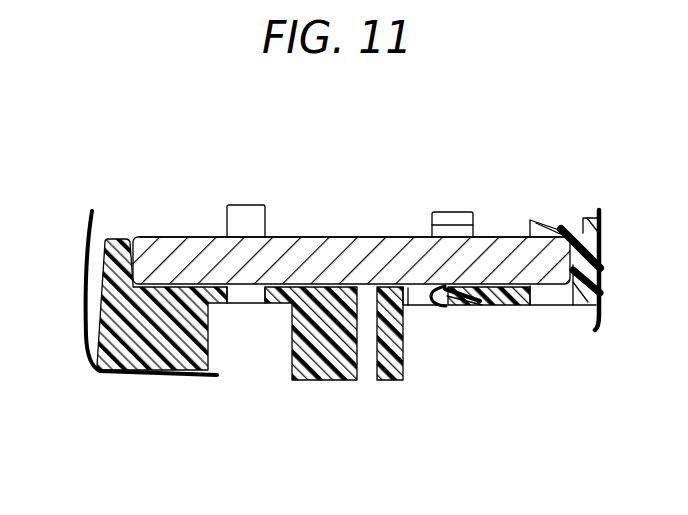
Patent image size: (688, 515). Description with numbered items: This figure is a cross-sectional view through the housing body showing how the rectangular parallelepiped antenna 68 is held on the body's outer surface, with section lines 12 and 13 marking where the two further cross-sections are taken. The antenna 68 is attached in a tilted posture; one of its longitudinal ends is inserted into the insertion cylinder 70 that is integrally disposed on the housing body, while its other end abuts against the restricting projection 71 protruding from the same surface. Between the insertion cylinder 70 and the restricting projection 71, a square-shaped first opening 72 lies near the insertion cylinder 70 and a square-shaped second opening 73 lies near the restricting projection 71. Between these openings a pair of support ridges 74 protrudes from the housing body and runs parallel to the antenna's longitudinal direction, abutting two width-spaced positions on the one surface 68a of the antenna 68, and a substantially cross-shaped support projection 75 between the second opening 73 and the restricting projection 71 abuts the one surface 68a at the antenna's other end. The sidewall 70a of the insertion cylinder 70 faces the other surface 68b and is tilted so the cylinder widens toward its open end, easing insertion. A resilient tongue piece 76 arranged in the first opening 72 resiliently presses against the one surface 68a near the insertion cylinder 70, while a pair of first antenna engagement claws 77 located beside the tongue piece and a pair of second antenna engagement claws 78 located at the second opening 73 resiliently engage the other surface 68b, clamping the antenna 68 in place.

The section line 12 is at (447, 160).
The section line 13 is at (243, 160).
The antenna 68 is at (603, 263).
The one surface of the antenna 68a is at (364, 305).
The other surface of the antenna 68b is at (303, 237).
The insertion cylinder 70 is at (568, 228).
The sidewall of the insertion cylinder 70a is at (533, 221).
The restricting projection 71 is at (107, 258).
The first opening 72 is at (421, 306).
The second opening 73 is at (259, 303).
The support ridge 74 is at (343, 283).
The support projection 75 is at (178, 283).
The resilient tongue piece 76 is at (460, 313).
The first antenna engagement claw 77 is at (463, 212).
The second antenna engagement claw 78 is at (253, 205).